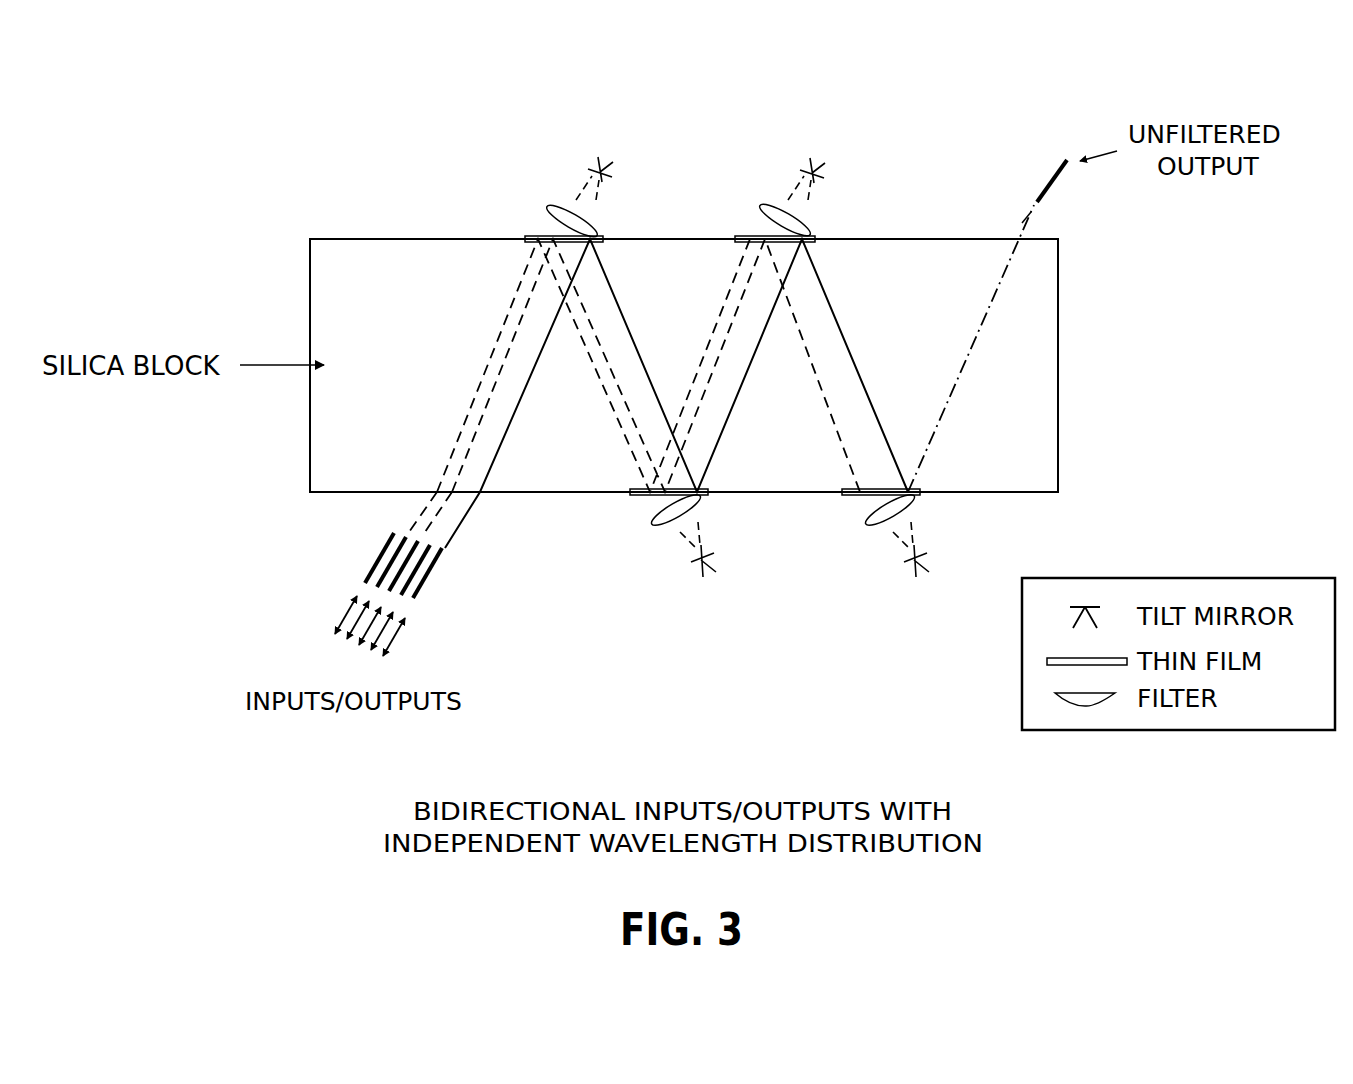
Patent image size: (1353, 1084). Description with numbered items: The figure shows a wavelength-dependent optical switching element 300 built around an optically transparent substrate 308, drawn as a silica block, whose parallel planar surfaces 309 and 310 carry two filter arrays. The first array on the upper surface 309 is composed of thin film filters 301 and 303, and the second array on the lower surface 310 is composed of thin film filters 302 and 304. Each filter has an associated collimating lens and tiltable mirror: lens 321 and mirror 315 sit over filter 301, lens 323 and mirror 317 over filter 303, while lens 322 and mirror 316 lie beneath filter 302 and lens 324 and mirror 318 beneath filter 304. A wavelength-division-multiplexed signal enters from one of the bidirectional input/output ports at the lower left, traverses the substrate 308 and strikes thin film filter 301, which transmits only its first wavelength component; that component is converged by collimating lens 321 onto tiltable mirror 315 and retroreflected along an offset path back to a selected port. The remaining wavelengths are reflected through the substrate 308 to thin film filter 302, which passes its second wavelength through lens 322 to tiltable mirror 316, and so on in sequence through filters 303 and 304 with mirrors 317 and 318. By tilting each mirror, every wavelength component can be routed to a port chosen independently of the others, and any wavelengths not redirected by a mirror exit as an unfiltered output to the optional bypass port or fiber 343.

The optical switching element 300 is at (195, 102).
The thin film filter 301 is at (532, 236).
The thin film filter 302 is at (636, 497).
The thin film filter 303 is at (746, 236).
The thin film filter 304 is at (846, 497).
The optically transparent substrate 308 is at (322, 428).
The planar surface 309 is at (373, 238).
The planar surface 310 is at (509, 495).
The tiltable mirror 315 is at (608, 170).
The tiltable mirror 316 is at (712, 554).
The tiltable mirror 317 is at (820, 170).
The tiltable mirror 318 is at (925, 554).
The collimating lens 321 is at (554, 206).
The collimating lens 322 is at (661, 524).
The collimating lens 323 is at (766, 206).
The collimating lens 324 is at (874, 524).
The bypass port or fiber 343 is at (1048, 190).